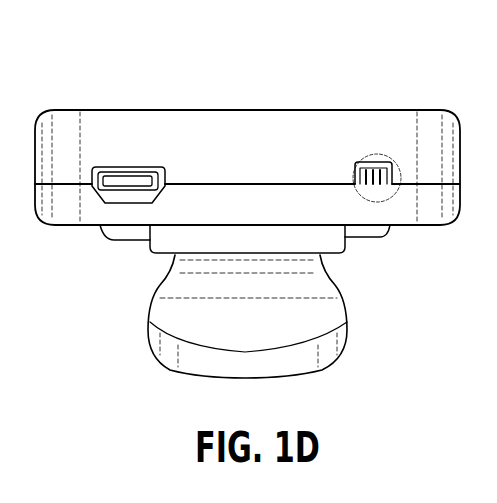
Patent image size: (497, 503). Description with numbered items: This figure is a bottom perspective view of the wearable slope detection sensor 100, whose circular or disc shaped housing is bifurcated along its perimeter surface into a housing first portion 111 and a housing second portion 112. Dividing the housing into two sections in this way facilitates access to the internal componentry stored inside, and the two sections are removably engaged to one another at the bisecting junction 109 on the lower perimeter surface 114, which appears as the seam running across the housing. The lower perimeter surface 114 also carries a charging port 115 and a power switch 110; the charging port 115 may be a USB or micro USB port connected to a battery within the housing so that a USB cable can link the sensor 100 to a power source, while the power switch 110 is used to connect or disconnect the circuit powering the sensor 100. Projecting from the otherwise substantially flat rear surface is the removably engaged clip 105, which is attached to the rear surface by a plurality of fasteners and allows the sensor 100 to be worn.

The sensor 100 is at (251, 201).
The clip 105 is at (370, 236).
The bisecting junction 109 is at (423, 184).
The power switch 110 is at (377, 163).
The housing first portion 111 is at (259, 127).
The housing second portion 112 is at (67, 212).
The lower perimeter surface 114 is at (355, 127).
The charging port 115 is at (127, 166).